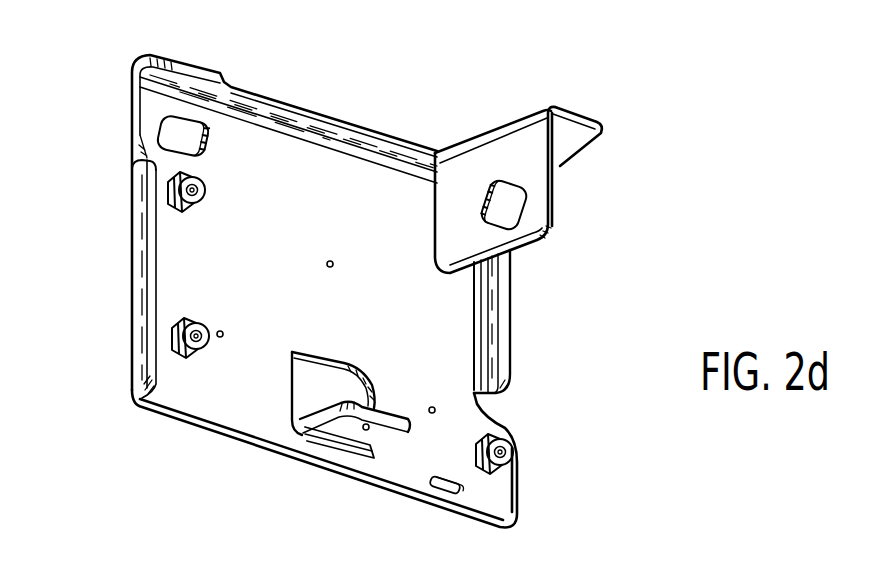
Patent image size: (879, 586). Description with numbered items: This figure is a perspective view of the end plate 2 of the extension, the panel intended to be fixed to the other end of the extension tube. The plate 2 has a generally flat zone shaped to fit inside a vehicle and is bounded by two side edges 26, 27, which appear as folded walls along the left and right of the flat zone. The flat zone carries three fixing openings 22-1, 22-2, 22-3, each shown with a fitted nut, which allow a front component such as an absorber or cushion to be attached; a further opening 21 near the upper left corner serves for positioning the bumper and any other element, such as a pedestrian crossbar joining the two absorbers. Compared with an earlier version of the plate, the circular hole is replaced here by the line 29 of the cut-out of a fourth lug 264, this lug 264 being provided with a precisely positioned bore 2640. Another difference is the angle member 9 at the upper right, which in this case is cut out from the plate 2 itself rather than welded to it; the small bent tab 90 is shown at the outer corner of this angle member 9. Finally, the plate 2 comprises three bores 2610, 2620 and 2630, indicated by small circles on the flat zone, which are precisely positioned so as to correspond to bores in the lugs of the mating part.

The end plate 2 is at (262, 162).
The opening 21 is at (167, 135).
The fixing opening 22-1 is at (180, 188).
The fixing opening 22-2 is at (184, 331).
The fixing opening 22-3 is at (513, 448).
The side edge 26 is at (150, 253).
The side edge 27 is at (506, 319).
The line of the cut-out 29 is at (340, 380).
The angle member 9 is at (533, 204).
The bent tab 90 is at (585, 116).
The fourth lug 264 is at (340, 425).
The bore 2610 is at (221, 338).
The bore 2620 is at (329, 260).
The bore 2630 is at (430, 414).
The bore 2640 is at (366, 431).